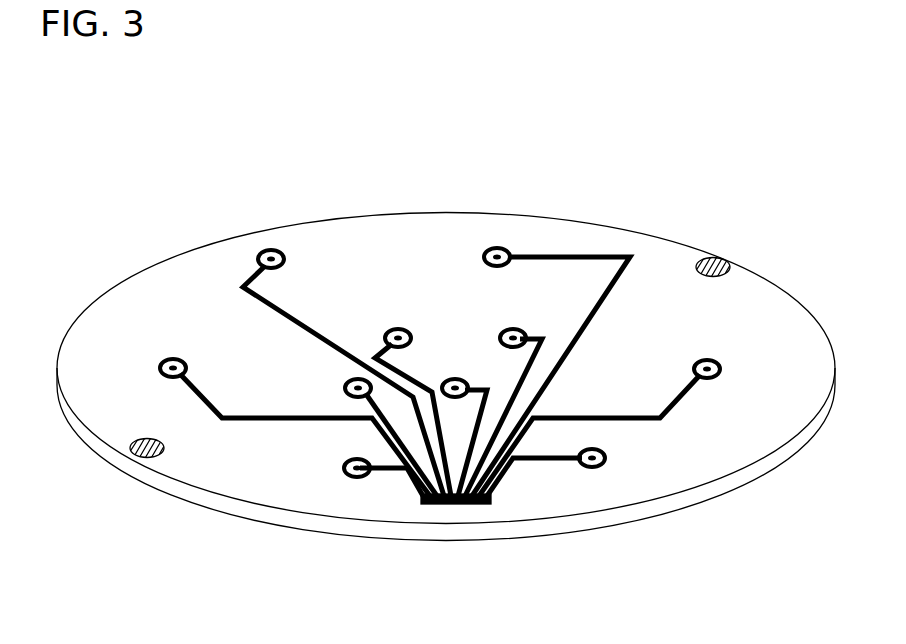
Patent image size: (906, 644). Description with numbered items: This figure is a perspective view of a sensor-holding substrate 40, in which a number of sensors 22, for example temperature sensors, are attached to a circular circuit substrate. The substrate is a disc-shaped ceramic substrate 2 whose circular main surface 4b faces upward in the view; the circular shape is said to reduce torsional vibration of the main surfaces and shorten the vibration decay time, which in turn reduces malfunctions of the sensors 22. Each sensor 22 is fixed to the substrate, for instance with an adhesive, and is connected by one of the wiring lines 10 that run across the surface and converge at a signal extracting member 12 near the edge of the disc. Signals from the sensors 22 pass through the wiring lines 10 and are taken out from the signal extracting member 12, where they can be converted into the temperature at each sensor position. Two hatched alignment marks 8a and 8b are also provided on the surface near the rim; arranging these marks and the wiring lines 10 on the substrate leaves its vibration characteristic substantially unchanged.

The sensor-holding substrate 40 is at (420, 150).
The ceramic substrate 2 is at (182, 282).
The main surface 4b is at (140, 297).
The wiring lines 10 is at (314, 330).
The sensors 22 is at (270, 250).
The signal extracting member 12 is at (465, 505).
The alignment mark 8a is at (149, 456).
The alignment mark 8b is at (713, 260).